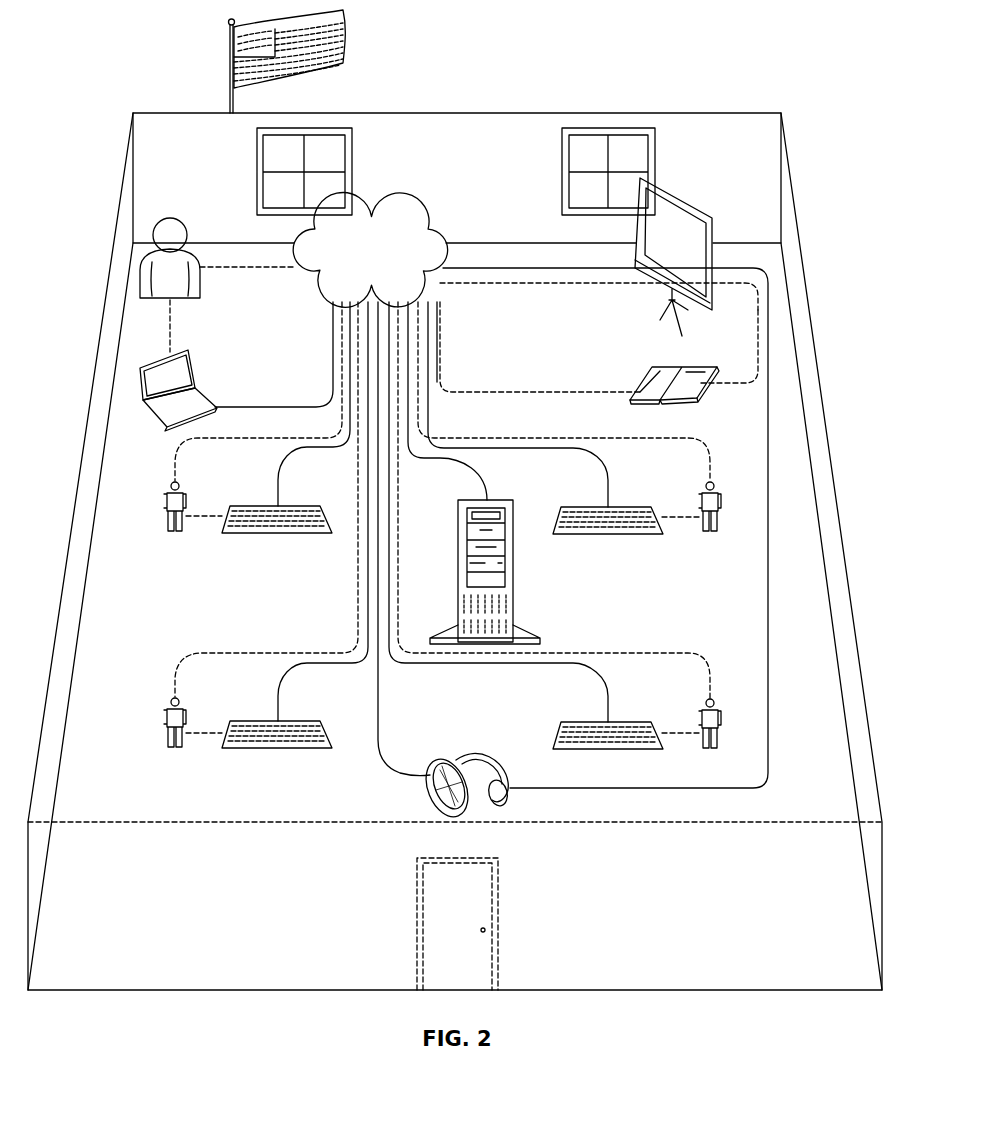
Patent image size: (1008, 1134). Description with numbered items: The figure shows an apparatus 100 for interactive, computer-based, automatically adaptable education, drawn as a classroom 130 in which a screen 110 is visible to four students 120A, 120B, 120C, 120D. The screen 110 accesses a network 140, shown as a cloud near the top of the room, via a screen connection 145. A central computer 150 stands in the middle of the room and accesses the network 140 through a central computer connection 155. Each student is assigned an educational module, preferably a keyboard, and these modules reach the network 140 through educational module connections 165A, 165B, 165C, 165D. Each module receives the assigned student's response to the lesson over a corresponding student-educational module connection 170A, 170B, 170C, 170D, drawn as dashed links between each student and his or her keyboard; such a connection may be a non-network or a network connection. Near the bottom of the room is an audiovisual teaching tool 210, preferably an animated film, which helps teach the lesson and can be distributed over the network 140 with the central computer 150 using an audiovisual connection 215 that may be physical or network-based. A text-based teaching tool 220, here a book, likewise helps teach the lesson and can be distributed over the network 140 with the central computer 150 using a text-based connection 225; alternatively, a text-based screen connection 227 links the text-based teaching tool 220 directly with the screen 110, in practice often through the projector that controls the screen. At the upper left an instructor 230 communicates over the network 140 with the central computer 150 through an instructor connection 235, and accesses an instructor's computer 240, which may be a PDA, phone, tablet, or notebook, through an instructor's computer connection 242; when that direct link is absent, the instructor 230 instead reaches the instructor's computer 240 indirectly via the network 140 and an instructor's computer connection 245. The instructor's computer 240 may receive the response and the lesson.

The apparatus 100 is at (477, 81).
The classroom 130 is at (685, 110).
The screen 110 is at (693, 207).
The network 140 is at (422, 217).
The screen connection 145 is at (558, 268).
The instructor 230 is at (200, 277).
The instructor connection 235 is at (285, 270).
The instructor's computer connection 242 is at (170, 337).
The instructor's computer 240 is at (197, 390).
The instructor's computer connection 245 is at (312, 410).
The text-based connection 225 is at (483, 392).
The text-based teaching tool 220 is at (650, 370).
The text-based screen connection 227 is at (758, 335).
The student 120A is at (185, 495).
The student 120B is at (185, 712).
The student 120C is at (700, 502).
The student 120D is at (700, 712).
The educational module connection 165A is at (310, 447).
The educational module connection 165B is at (322, 665).
The educational module connection 165C is at (530, 448).
The educational module connection 165D is at (530, 665).
The student-educational module connection 170A is at (210, 517).
The student-educational module connection 170B is at (208, 735).
The student-educational module connection 170C is at (687, 517).
The student-educational module connection 170D is at (687, 735).
The central computer connection 155 is at (477, 478).
The central computer 150 is at (513, 570).
The audiovisual connection 215 is at (380, 712).
The audiovisual teaching tool 210 is at (420, 793).